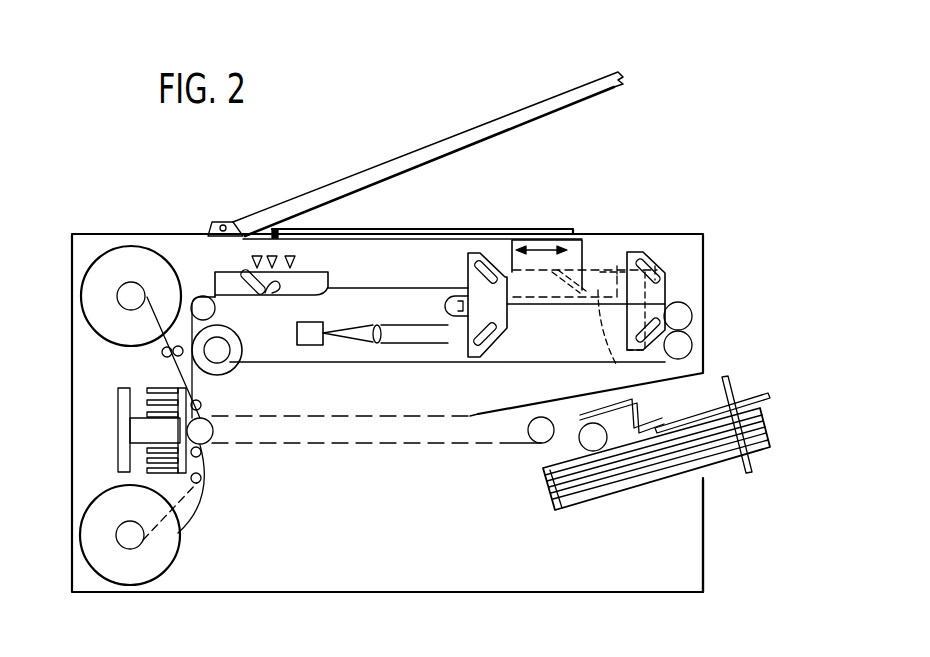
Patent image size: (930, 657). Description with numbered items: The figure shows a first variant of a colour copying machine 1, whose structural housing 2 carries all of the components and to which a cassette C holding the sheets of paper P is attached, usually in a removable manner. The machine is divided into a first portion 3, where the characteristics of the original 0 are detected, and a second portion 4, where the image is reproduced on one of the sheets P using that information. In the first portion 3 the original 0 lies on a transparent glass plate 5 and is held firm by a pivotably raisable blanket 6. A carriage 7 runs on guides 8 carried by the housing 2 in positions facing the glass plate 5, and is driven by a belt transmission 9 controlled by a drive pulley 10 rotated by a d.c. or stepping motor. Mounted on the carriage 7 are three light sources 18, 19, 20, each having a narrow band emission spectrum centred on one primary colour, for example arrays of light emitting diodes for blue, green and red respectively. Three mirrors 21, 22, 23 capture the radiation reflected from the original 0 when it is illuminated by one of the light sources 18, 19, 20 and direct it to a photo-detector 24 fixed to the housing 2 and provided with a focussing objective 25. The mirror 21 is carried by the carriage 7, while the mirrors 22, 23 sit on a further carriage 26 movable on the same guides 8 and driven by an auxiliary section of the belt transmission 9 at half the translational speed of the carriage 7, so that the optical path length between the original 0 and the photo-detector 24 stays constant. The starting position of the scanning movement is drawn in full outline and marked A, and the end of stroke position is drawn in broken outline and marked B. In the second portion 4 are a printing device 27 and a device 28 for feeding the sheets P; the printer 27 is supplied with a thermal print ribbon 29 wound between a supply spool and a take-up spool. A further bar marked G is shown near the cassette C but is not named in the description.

The copying machine 1 is at (722, 270).
The structural housing 2 is at (703, 582).
The first portion 3 is at (200, 282).
The second portion 4 is at (350, 462).
The transparent glass plate 5 is at (413, 229).
The pivotably raisable blanket 6 is at (538, 107).
The carriage 7 is at (222, 270).
The guides 8 is at (430, 265).
The belt transmission 9 is at (465, 370).
The drive pulley 10 is at (215, 370).
The light source 18 is at (257, 256).
The light source 19 is at (272, 256).
The light source 20 is at (290, 256).
The mirror 21 is at (276, 293).
The mirror 22 is at (485, 264).
The mirror 23 is at (492, 340).
The photo-detector 24 is at (313, 334).
The focussing objective 25 is at (375, 338).
The further carriage 26 is at (500, 313).
The printing device 27 is at (110, 447).
The feed device 28 is at (240, 468).
The thermal print ribbon 29 is at (158, 347).
The starting position A is at (212, 258).
The end of stroke position B is at (606, 250).
The cassette C is at (667, 480).
The guide bar G is at (763, 395).
The sheets of paper P is at (730, 452).
The original 0 is at (566, 228).